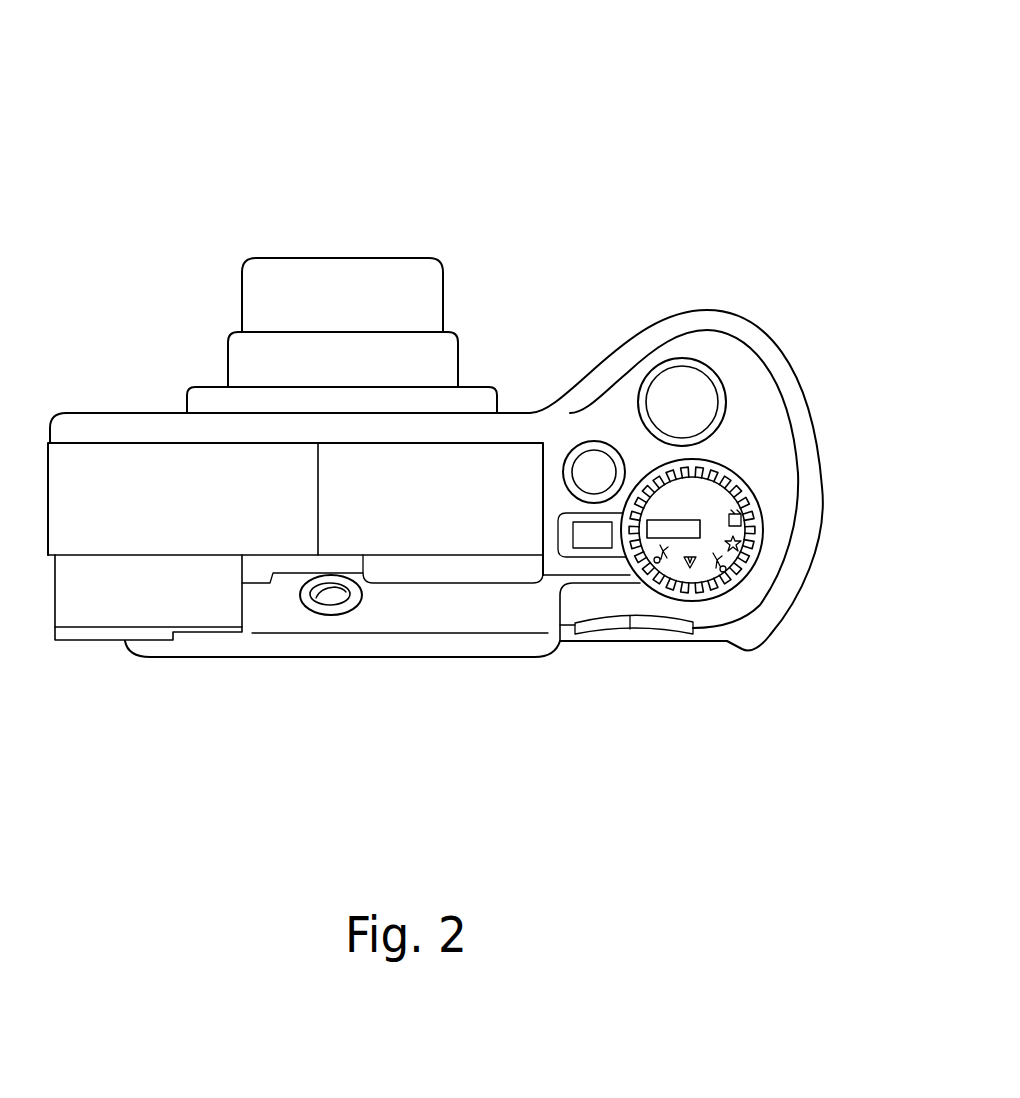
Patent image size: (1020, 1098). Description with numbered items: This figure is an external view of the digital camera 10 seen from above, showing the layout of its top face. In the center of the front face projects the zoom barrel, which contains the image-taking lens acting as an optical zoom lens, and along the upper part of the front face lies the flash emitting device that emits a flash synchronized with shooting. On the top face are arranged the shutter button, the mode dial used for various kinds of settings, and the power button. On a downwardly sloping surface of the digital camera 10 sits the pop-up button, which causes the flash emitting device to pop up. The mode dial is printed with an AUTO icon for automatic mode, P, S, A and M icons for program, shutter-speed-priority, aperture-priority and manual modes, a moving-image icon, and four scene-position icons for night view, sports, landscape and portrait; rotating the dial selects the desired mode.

The digital camera 10 is at (368, 150).